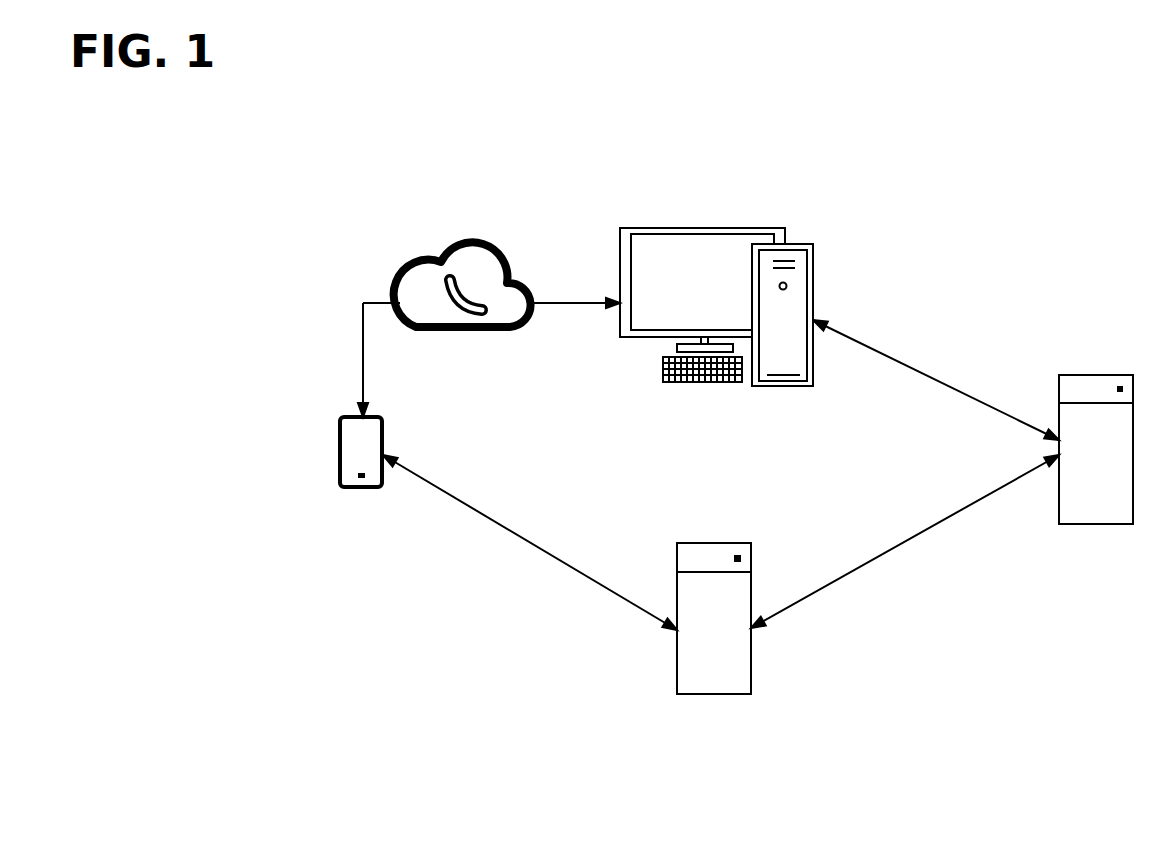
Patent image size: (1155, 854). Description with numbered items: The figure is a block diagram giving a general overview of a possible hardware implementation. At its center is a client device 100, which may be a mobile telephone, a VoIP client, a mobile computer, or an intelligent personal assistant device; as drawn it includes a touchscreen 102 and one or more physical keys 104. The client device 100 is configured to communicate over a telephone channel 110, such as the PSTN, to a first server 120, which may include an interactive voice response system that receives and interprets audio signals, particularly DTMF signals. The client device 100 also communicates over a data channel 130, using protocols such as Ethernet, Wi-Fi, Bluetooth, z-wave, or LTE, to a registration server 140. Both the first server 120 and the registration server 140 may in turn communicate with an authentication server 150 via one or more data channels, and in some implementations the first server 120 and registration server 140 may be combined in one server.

The client device 100 is at (337, 483).
The touchscreen 102 is at (353, 443).
The physical key 104 is at (362, 477).
The telephone channel 110 is at (467, 330).
The first server 120 is at (660, 347).
The data channel 130 is at (530, 542).
The registration server 140 is at (677, 678).
The authentication server 150 is at (1059, 510).